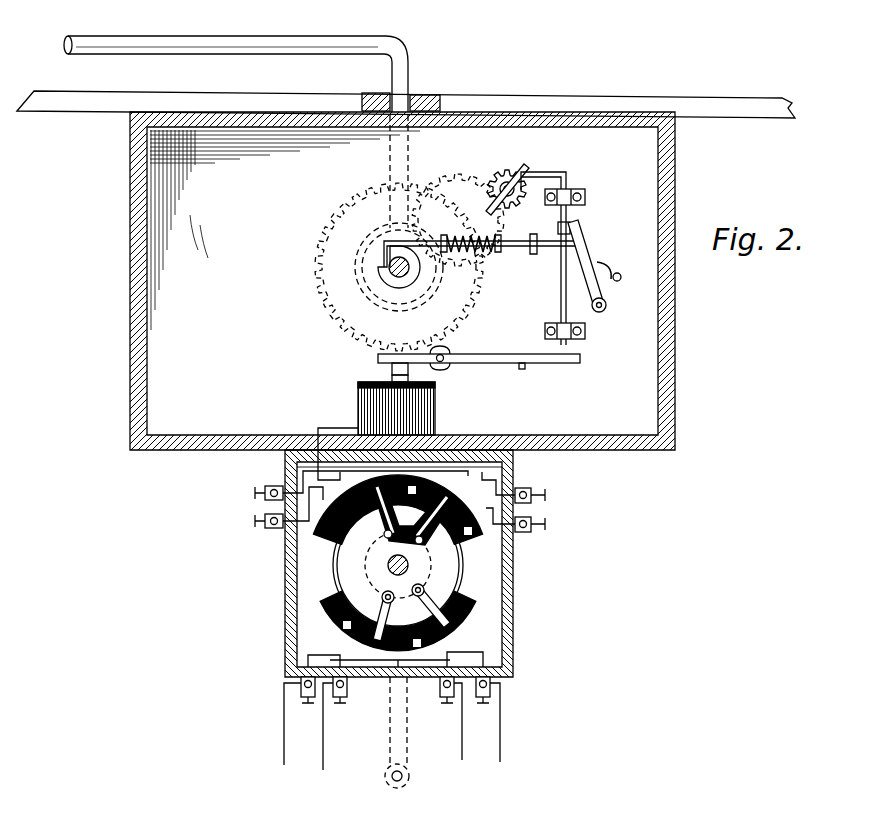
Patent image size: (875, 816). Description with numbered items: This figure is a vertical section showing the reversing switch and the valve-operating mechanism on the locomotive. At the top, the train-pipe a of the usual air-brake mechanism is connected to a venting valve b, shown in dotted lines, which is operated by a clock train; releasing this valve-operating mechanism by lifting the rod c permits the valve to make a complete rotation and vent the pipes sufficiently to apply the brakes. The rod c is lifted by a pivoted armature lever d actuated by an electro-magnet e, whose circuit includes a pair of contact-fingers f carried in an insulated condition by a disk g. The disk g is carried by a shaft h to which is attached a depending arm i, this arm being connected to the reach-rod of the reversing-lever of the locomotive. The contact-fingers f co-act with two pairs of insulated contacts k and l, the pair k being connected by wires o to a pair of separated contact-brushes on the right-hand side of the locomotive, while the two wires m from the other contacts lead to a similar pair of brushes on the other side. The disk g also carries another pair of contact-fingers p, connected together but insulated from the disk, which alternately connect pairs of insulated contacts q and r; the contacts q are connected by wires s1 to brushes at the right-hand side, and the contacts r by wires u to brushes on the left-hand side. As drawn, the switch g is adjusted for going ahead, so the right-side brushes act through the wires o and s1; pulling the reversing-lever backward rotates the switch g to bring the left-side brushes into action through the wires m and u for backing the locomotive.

The train-pipe a is at (212, 39).
The venting valve b is at (357, 266).
The rod c is at (559, 294).
The pivoted armature lever d is at (488, 365).
The electro-magnet e is at (357, 399).
The contact-fingers f is at (372, 613).
The disk g is at (398, 565).
The shaft h is at (463, 562).
The depending arm i is at (404, 746).
The insulated contacts k is at (338, 638).
The insulated contacts l is at (333, 624).
The wires m is at (286, 731).
The wires o is at (462, 736).
The contact-fingers p is at (397, 514).
The insulated contacts q is at (345, 490).
The insulated contacts r is at (441, 464).
The wires s1 is at (523, 510).
The wires u is at (275, 501).